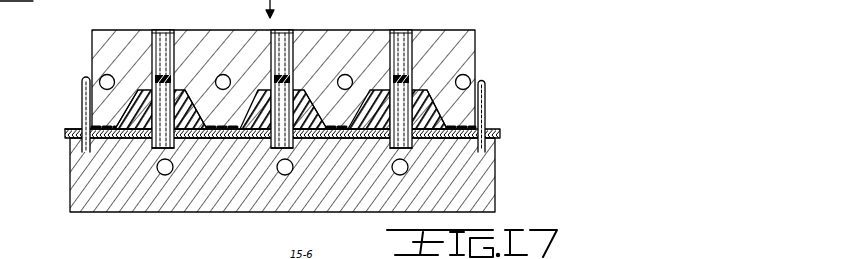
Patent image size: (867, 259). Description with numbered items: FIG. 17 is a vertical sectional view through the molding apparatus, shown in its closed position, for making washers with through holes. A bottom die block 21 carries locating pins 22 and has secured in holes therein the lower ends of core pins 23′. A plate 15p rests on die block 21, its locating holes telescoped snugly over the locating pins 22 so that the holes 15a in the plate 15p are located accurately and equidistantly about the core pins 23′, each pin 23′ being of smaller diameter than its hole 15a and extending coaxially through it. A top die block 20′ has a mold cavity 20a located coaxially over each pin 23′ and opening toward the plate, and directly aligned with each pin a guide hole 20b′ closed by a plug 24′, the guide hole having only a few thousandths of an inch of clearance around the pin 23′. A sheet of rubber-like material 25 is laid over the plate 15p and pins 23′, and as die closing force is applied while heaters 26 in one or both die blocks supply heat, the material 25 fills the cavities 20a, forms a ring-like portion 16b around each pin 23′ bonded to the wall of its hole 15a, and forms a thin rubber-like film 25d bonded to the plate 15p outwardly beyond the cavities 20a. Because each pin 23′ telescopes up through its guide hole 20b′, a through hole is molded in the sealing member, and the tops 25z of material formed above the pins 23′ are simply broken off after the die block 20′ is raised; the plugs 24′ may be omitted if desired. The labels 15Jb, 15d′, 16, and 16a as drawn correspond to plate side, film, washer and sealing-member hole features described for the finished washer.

The holes in plate 15a is at (75, 128).
The plate 15p is at (502, 132).
The plate portion 15Jb is at (450, 140).
The layer 15d′ is at (337, 124).
The passage 16 is at (293, 172).
The sloped portion 16a is at (135, 99).
The ring-like portion 16b is at (200, 141).
The top die block 20′ is at (477, 52).
The mold cavity 20a is at (206, 91).
The guide hole 20b′ is at (383, 88).
The bottom die block 21 is at (496, 179).
The locating pin 22 is at (80, 92).
The core pin 23′ is at (390, 141).
The plug 24′ is at (412, 50).
The rubber-like material 25 is at (134, 92).
The rubber-like film 25d is at (218, 127).
The tops 25z is at (168, 76).
The heater 26 is at (342, 76).